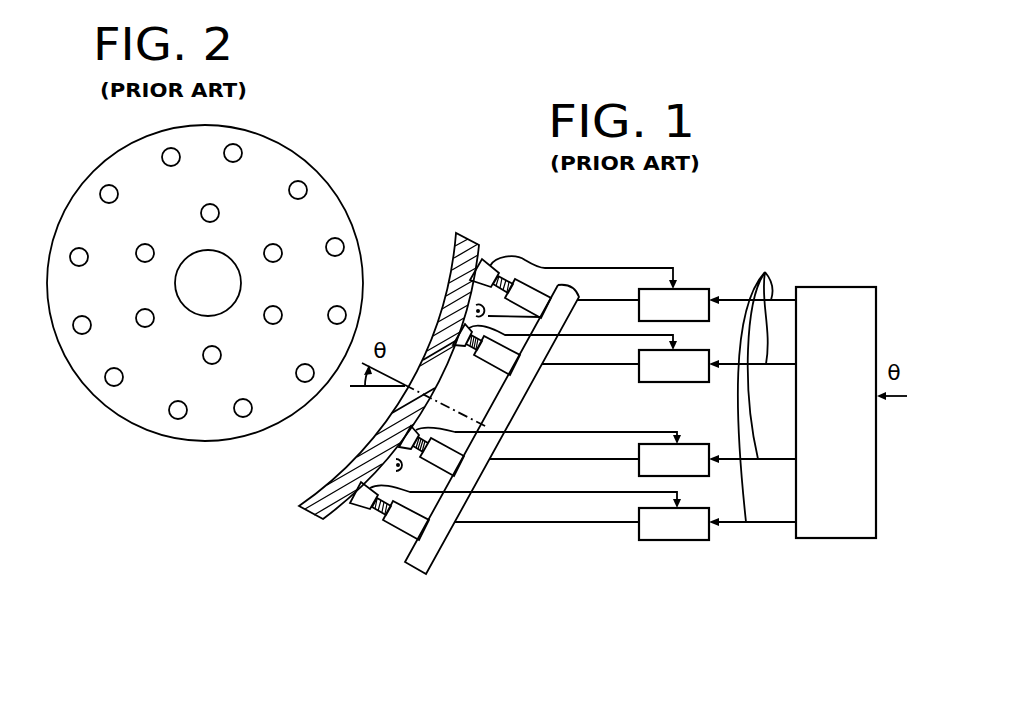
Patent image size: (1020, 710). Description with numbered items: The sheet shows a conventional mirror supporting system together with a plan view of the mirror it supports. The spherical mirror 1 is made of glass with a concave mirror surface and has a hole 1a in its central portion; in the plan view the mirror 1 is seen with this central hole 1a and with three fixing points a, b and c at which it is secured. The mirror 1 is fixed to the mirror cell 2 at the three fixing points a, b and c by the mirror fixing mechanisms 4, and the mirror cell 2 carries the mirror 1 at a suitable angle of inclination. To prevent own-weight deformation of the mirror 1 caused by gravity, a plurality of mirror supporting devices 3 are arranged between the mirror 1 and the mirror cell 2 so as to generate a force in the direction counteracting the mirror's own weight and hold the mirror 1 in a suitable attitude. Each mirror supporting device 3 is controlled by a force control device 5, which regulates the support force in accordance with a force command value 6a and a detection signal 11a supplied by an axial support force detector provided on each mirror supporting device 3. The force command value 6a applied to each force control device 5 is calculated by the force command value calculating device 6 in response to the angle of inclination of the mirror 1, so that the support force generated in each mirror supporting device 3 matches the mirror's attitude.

In FIG. 2, the spherical mirror 1 is at (121, 417).
In FIG. 1, the spherical mirror 1 is at (455, 234).
In FIG. 2, the hole 1a is at (241, 283).
In FIG. 1, the hole 1a is at (437, 378).
In FIG. 1, the mirror cell 2 is at (440, 547).
In FIG. 1, the mirror supporting devices 3 is at (456, 464).
In FIG. 1, the mirror fixing mechanism 4 is at (498, 288).
In FIG. 1, the force control devices 5 is at (670, 540).
In FIG. 1, the force command value calculating device 6 is at (836, 538).
In FIG. 1, the force command value 6a is at (752, 388).
In FIG. 1, the detection signal 11a is at (608, 267).
In FIG. 2, the fixing point a is at (249, 201).
In FIG. 1, the fixing point a is at (472, 307).
In FIG. 2, the fixing point b is at (108, 285).
In FIG. 2, the fixing point c is at (263, 363).
In FIG. 1, the fixing point c is at (390, 450).